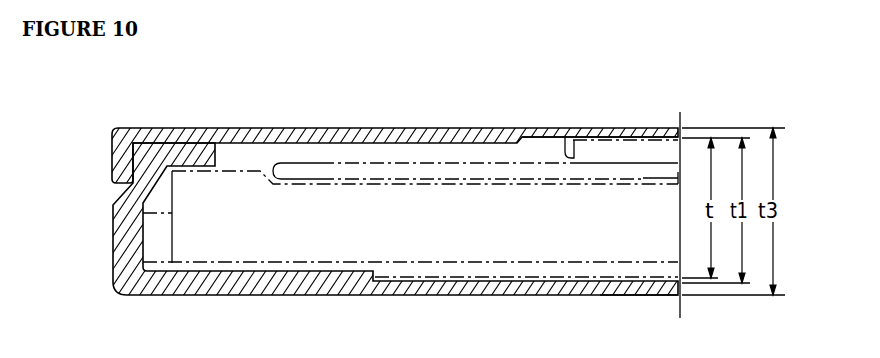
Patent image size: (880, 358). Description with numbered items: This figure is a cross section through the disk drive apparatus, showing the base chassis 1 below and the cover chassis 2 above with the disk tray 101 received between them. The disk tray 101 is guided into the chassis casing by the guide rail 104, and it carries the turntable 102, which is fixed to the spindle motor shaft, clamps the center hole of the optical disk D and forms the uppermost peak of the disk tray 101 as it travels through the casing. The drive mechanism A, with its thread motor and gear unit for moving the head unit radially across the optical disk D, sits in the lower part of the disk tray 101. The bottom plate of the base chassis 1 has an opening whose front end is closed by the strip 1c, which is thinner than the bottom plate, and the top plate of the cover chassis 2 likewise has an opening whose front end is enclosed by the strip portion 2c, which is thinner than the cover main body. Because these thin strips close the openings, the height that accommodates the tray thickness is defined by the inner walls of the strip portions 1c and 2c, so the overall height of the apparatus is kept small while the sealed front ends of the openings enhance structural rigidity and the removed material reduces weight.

The base chassis 1 is at (387, 296).
The strip 1c is at (640, 297).
The cover chassis 2 is at (288, 127).
The strip portion 2c is at (542, 128).
The disk tray 101 is at (292, 236).
The turntable 102 is at (571, 137).
The guide rail 104 is at (150, 243).
The optical disk D is at (372, 160).
The drive mechanism A is at (525, 262).